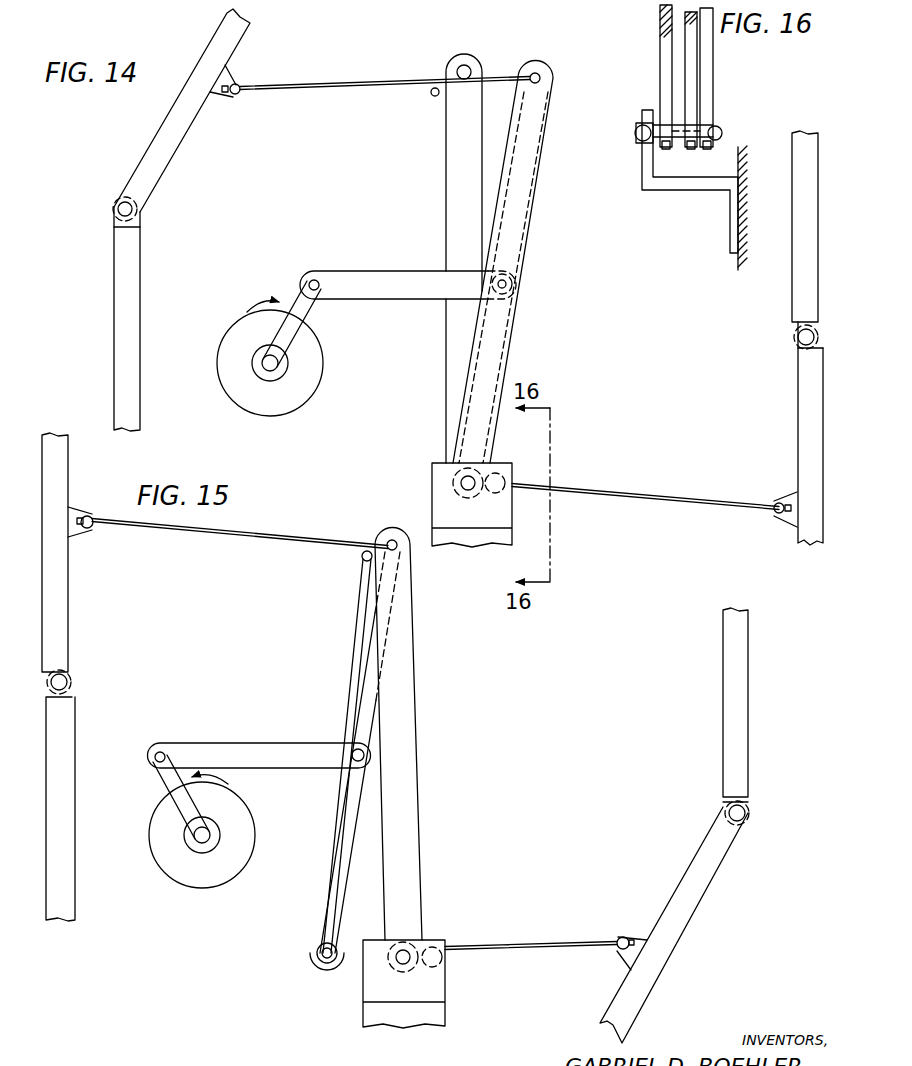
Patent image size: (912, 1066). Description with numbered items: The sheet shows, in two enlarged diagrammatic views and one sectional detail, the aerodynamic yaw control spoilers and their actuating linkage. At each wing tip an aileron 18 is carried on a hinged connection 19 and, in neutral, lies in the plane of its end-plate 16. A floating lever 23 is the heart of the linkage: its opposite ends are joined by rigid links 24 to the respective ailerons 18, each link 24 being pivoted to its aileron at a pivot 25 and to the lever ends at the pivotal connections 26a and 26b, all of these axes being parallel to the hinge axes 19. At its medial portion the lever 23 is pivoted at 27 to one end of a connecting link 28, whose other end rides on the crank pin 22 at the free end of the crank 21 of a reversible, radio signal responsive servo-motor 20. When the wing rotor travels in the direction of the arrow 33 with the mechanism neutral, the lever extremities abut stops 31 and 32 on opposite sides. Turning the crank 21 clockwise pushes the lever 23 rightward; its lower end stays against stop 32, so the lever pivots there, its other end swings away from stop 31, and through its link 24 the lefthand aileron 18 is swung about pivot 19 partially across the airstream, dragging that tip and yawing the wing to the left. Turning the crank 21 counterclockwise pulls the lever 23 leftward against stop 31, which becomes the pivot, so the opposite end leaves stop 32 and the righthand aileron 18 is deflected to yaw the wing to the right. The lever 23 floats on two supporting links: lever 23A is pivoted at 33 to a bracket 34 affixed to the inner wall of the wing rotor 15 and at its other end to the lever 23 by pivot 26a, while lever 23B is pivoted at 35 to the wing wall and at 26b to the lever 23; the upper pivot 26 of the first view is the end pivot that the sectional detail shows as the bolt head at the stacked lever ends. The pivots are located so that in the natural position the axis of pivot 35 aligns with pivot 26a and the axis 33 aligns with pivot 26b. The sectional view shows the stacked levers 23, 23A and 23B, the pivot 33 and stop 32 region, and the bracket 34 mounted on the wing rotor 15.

In FIG. 16, the wing rotor 15 is at (740, 263).
In FIG. 14, the end-plate 16 is at (795, 287).
In FIG. 15, the end-plate 16 is at (65, 767).
In FIG. 14, the aileron 18 is at (155, 142).
In FIG. 15, the aileron 18 is at (60, 472).
In FIG. 14, the hinged connection 19 is at (793, 338).
In FIG. 15, the hinged connection 19 is at (72, 675).
In FIG. 14, the servo-motor 20 is at (277, 405).
In FIG. 15, the servo-motor 20 is at (210, 880).
In FIG. 14, the crank 21 is at (310, 313).
In FIG. 15, the crank 21 is at (165, 785).
In FIG. 14, the crank pin 22 is at (317, 272).
In FIG. 15, the crank pin 22 is at (160, 746).
In FIG. 14, the floating lever 23 is at (527, 213).
In FIG. 15, the floating lever 23 is at (362, 692).
In FIG. 16, the floating lever 23 is at (690, 48).
In FIG. 14, the supporting lever 23A is at (527, 263).
In FIG. 15, the supporting lever 23A is at (412, 828).
In FIG. 16, the supporting lever 23A is at (665, 82).
In FIG. 14, the supporting lever 23B is at (452, 198).
In FIG. 15, the supporting lever 23B is at (337, 816).
In FIG. 16, the supporting lever 23B is at (707, 58).
In FIG. 14, the rigid link 24 is at (360, 88).
In FIG. 15, the rigid link 24 is at (213, 533).
In FIG. 14, the pivot 25 is at (238, 98).
In FIG. 15, the pivot 25 is at (90, 530).
In FIG. 14, the pivot pin 26 is at (538, 67).
In FIG. 16, the pivot pin 26 is at (717, 128).
In FIG. 15, the pivotal connection 26a is at (391, 542).
In FIG. 15, the pivotal connection 26b is at (312, 961).
In FIG. 14, the pivot 27 is at (516, 291).
In FIG. 15, the pivot 27 is at (352, 748).
In FIG. 14, the connecting link 28 is at (425, 277).
In FIG. 15, the connecting link 28 is at (278, 745).
In FIG. 14, the stop 31 is at (433, 95).
In FIG. 15, the stop 31 is at (364, 560).
In FIG. 14, the stop 32 is at (504, 485).
In FIG. 15, the stop 32 is at (447, 970).
In FIG. 16, the stop 32 is at (683, 139).
In FIG. 14, the pivot 33 is at (467, 493).
In FIG. 15, the pivot 33 is at (403, 966).
In FIG. 16, the pivot 33 is at (635, 133).
In FIG. 14, the bracket 34 is at (432, 483).
In FIG. 15, the bracket 34 is at (368, 990).
In FIG. 16, the bracket 34 is at (642, 182).
In FIG. 14, the pivot 35 is at (473, 58).